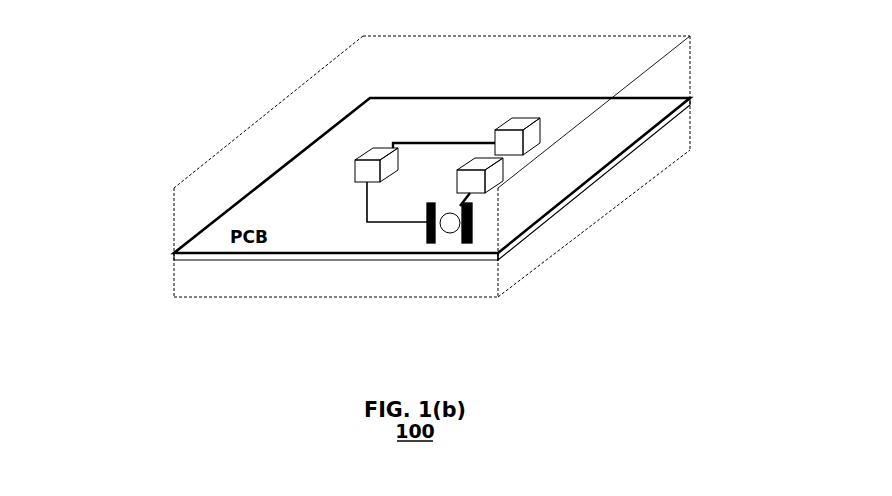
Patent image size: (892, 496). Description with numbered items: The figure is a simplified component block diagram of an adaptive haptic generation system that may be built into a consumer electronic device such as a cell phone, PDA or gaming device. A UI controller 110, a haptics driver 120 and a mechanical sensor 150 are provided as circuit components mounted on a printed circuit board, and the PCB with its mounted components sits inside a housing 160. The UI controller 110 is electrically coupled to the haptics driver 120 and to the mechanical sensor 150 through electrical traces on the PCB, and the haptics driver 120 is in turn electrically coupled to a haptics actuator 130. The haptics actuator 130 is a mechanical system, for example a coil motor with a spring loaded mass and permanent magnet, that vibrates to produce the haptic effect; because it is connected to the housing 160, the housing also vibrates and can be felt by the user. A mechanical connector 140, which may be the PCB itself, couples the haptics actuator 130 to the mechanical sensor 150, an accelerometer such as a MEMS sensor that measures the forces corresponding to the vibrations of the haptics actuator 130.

The UI controller 110 is at (524, 120).
The haptics driver 120 is at (502, 170).
The haptics actuator 130 is at (450, 246).
The mechanical connector 140 is at (397, 223).
The mechanical sensor 150 is at (357, 163).
The housing 160 is at (174, 212).